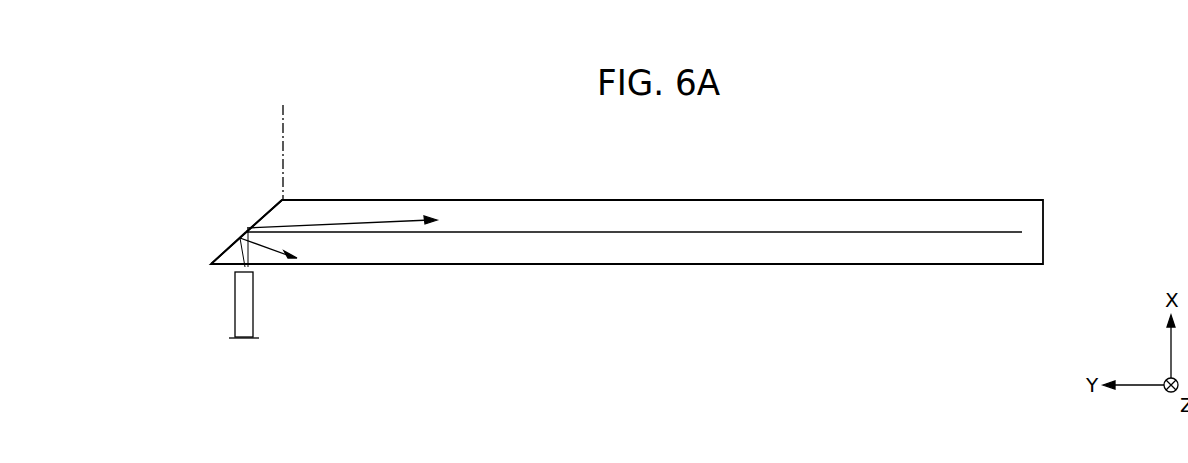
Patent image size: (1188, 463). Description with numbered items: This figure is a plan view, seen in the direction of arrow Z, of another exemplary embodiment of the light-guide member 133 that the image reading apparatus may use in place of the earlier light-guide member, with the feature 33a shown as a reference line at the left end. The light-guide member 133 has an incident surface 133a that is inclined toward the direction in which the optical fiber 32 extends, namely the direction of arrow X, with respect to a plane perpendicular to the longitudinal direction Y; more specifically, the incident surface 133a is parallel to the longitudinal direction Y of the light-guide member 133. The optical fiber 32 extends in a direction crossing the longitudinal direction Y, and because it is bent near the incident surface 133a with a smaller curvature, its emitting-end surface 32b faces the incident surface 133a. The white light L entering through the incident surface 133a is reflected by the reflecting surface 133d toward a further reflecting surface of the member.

The light-guide member 133 is at (1043, 215).
The reflecting surface 133d is at (260, 217).
The incident surface 133a is at (230, 265).
The reference line / side edge 33a is at (283, 138).
The optical fiber 32 is at (257, 307).
The emitting-end surface 32b is at (245, 267).
The white light L is at (684, 232).